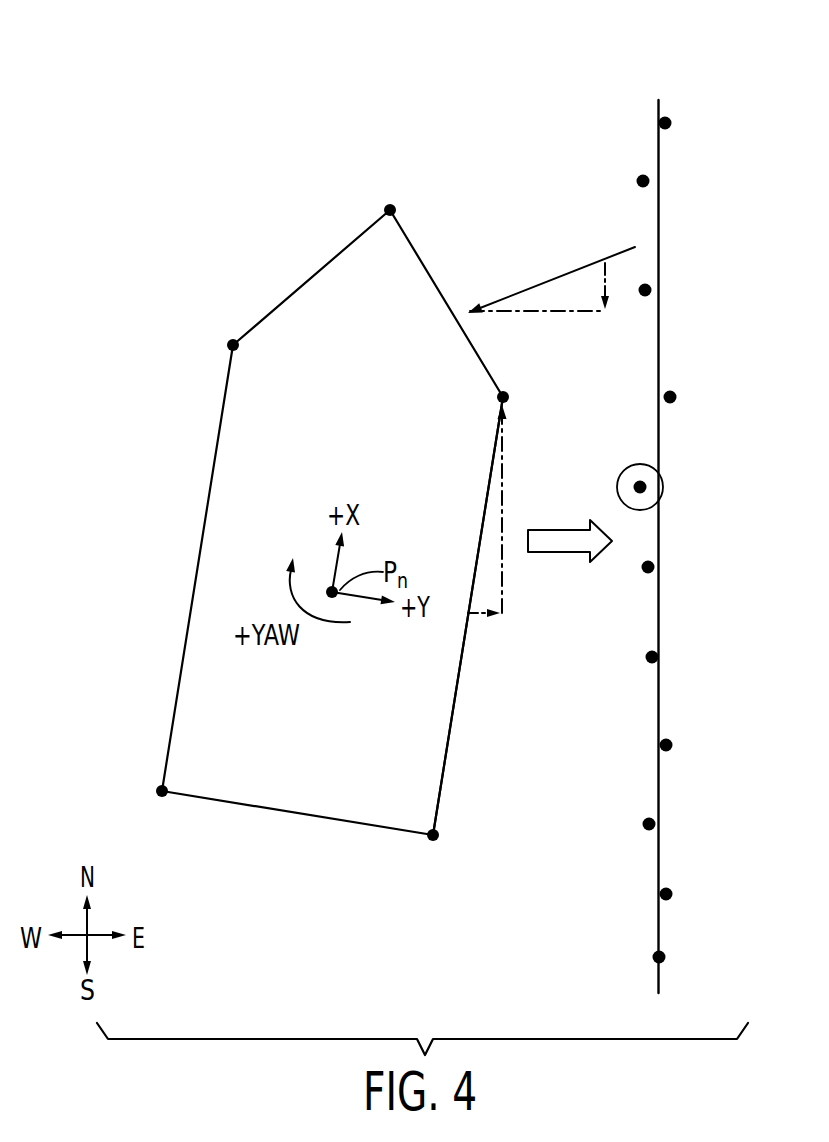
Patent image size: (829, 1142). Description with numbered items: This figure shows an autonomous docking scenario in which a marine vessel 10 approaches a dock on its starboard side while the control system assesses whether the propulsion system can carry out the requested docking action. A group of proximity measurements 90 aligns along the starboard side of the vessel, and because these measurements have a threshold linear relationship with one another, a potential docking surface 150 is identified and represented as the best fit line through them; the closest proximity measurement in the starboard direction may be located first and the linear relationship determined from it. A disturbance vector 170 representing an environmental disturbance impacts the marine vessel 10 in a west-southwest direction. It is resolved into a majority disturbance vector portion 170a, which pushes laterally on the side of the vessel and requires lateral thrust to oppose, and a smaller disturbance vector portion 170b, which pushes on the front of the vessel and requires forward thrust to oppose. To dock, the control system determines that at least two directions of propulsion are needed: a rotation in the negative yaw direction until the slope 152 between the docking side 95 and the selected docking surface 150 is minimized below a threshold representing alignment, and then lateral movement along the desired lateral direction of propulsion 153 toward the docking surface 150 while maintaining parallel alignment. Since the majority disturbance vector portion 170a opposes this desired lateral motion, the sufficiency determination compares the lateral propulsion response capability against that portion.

The marine vessel 10 is at (312, 275).
The docking side 95 is at (452, 725).
The docking surface 150 is at (658, 225).
The proximity measurements 90 is at (643, 178).
The disturbance vector 170 is at (557, 279).
The majority disturbance vector portion 170a is at (547, 313).
The smaller disturbance vector portion 170b is at (605, 275).
The slope 152 is at (520, 613).
The desired lateral direction of propulsion 153 is at (572, 563).